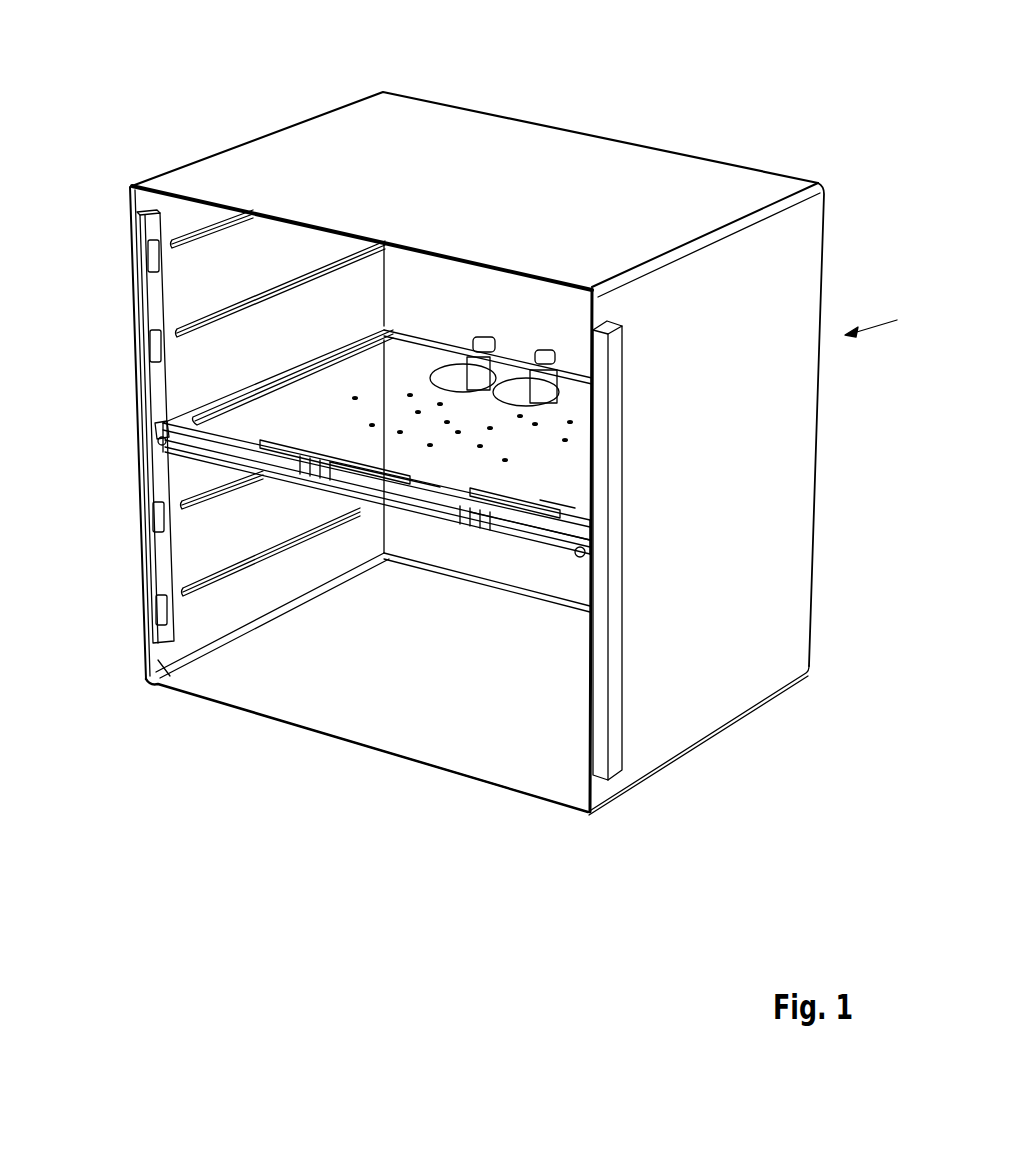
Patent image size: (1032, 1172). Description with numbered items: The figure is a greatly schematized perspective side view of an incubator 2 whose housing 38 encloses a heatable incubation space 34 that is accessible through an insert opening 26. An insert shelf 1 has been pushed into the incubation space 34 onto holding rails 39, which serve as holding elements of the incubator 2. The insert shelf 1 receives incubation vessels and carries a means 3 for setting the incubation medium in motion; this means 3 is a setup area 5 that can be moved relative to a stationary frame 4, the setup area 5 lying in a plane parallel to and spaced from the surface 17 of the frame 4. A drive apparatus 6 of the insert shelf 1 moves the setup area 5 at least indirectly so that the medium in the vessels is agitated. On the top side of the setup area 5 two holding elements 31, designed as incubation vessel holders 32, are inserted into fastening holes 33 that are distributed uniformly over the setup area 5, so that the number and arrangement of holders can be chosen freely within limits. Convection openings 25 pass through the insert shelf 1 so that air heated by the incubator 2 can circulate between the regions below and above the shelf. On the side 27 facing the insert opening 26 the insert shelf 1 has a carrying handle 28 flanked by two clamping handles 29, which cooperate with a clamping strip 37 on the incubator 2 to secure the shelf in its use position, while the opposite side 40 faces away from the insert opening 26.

The insert shelf 1 is at (160, 433).
The incubator 2 is at (534, 434).
The means for movement of the incubation medium 3 is at (381, 334).
The frame 4 is at (530, 540).
The setup area 5 is at (327, 392).
The drive apparatus 6 is at (548, 460).
The surface of the frame 17 is at (297, 363).
The convection openings 25 is at (359, 409).
The insert opening 26 is at (382, 739).
The side facing the insert opening 27 is at (170, 678).
The carrying handle 28 is at (427, 507).
The clamping handles 29 is at (186, 451).
The holding elements 31 is at (455, 338).
The incubation vessel holders 32 is at (530, 348).
The fastening holes 33 is at (405, 367).
The incubation space 34 is at (522, 618).
The clamping strip 37 is at (128, 215).
The housing 38 is at (803, 283).
The holding rails 39 is at (205, 228).
The side facing away from the insert opening 40 is at (891, 317).